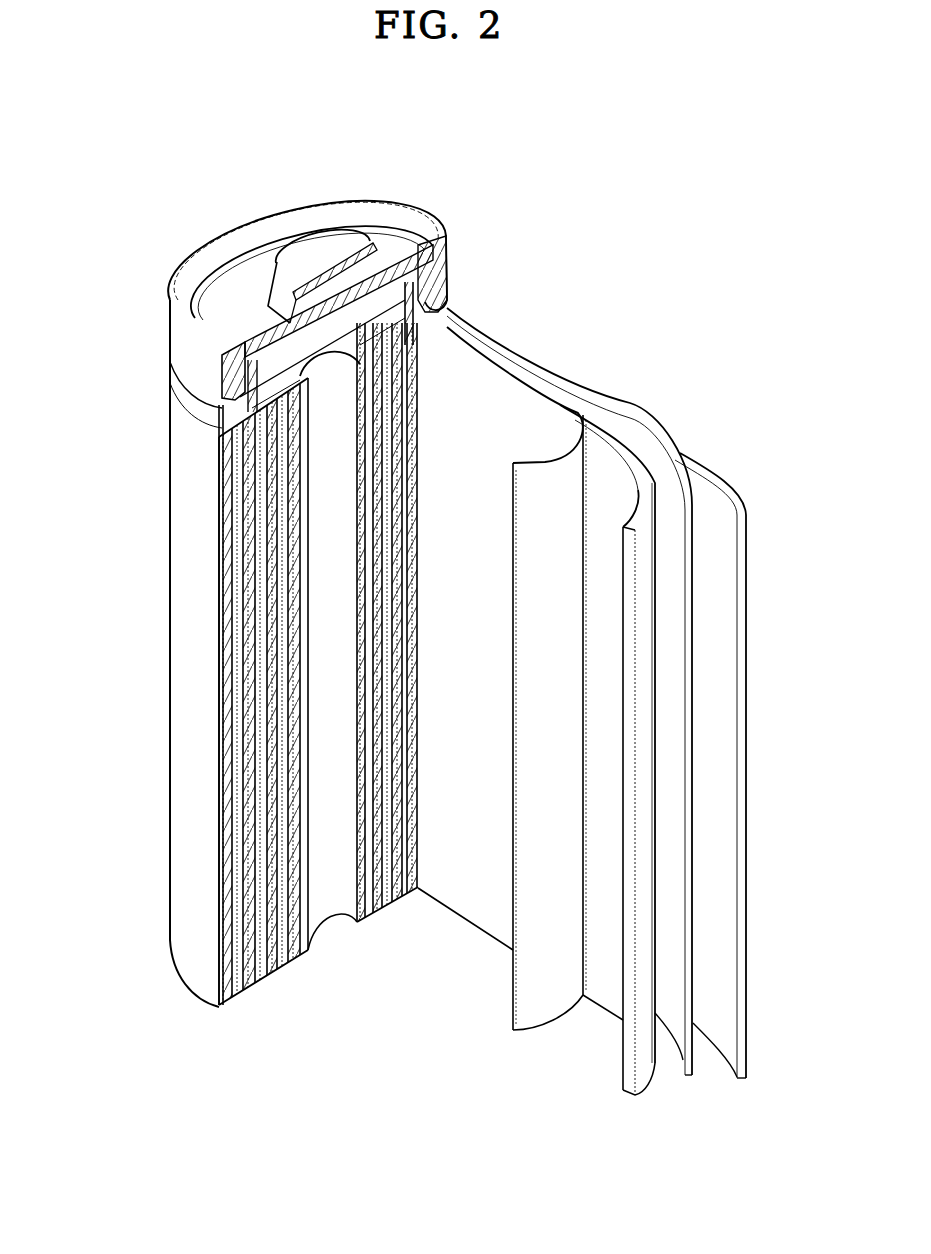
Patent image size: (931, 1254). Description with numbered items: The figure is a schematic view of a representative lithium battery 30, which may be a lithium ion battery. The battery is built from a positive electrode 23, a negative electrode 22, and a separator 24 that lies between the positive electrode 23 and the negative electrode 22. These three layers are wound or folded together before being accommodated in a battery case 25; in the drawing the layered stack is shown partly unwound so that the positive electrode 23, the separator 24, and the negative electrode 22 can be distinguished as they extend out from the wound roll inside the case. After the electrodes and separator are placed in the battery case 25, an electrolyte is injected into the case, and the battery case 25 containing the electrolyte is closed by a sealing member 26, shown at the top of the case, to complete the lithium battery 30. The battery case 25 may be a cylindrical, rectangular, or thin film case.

The lithium battery 30 is at (420, 144).
The battery case 25 is at (180, 652).
The sealing member 26 is at (305, 250).
The separator 24 is at (520, 380).
The positive electrode 23 is at (607, 437).
The negative electrode 22 is at (733, 490).